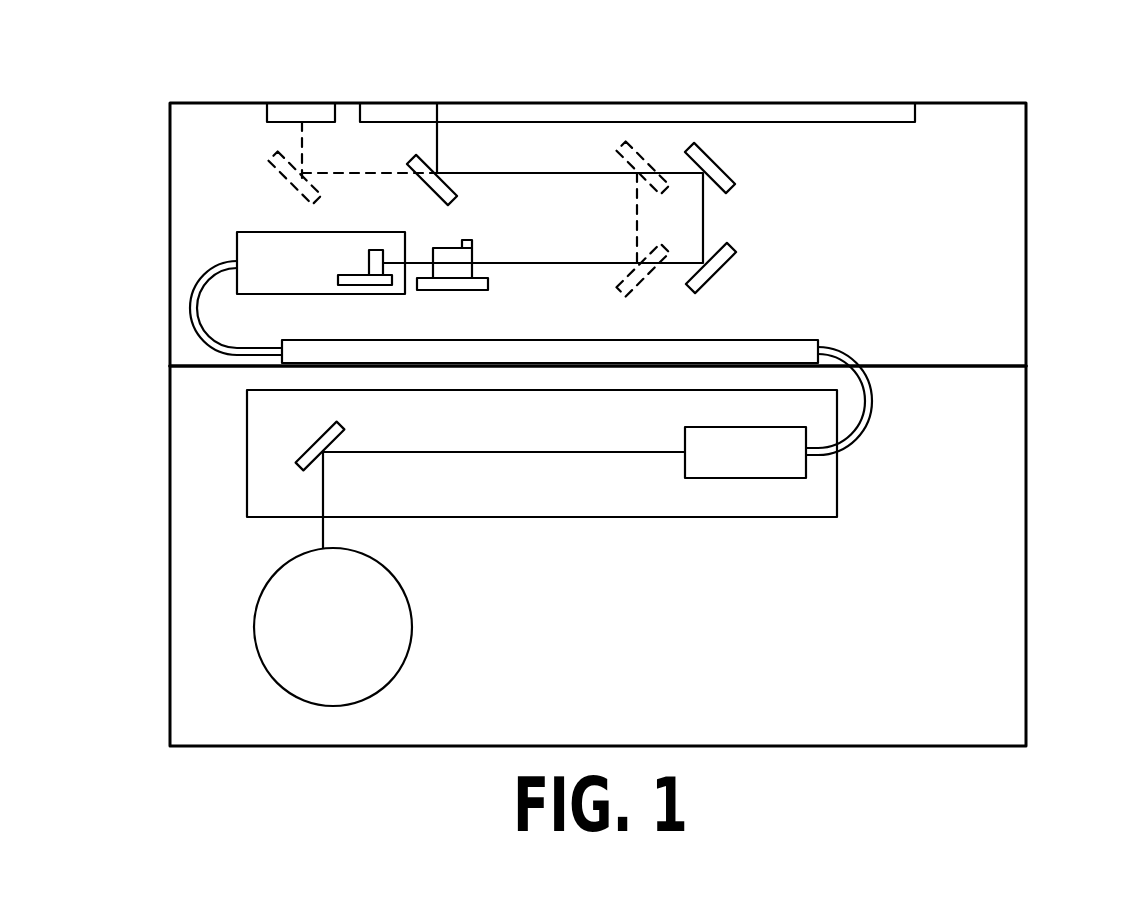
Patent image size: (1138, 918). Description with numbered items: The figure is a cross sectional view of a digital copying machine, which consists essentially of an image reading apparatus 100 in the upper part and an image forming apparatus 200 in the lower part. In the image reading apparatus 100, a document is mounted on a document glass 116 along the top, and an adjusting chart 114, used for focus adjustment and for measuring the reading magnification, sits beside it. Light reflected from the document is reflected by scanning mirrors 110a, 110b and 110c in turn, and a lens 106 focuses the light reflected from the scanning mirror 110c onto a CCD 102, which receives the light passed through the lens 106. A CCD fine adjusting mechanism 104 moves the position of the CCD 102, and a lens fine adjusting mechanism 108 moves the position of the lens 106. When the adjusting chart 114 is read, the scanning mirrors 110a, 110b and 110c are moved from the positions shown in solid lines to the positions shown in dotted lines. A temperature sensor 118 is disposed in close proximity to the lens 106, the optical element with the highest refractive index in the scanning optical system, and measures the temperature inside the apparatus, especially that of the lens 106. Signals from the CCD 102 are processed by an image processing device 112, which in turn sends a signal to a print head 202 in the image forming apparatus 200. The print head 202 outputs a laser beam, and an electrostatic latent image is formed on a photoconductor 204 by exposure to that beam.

The image reading apparatus 100 is at (1047, 104).
The CCD 102 is at (377, 262).
The CCD fine adjusting mechanism 104 is at (352, 284).
The lens 106 is at (444, 251).
The lens fine adjusting mechanism 108 is at (488, 282).
The scanning mirror 110a is at (448, 185).
The scanning mirror 110b is at (727, 175).
The scanning mirror 110c is at (733, 253).
The image processing device 112 is at (712, 339).
The adjusting chart 114 is at (285, 105).
The document glass 116 is at (798, 103).
The temperature sensor 118 is at (472, 243).
The image forming apparatus 200 is at (1047, 370).
The print head 202 is at (808, 518).
The photoconductor 204 is at (410, 643).